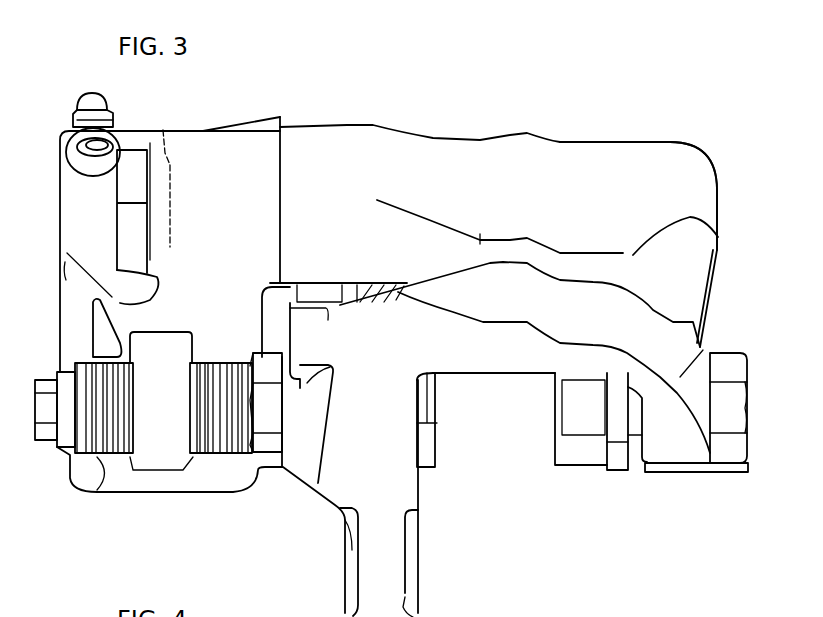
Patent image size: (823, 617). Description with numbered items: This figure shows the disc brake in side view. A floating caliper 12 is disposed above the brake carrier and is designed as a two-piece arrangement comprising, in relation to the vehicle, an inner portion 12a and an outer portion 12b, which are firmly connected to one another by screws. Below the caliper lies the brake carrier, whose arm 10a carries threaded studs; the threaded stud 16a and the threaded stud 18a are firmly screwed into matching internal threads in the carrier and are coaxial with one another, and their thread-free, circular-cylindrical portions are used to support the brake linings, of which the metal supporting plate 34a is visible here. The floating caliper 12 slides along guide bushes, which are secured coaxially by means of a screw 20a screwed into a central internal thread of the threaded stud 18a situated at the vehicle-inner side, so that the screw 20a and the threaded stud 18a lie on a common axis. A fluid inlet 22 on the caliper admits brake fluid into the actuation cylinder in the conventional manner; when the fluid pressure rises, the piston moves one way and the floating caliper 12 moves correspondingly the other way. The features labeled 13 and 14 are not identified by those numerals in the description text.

The arm of the brake carrier 10a is at (692, 443).
The floating caliper 12 is at (433, 127).
The inner portion of the floating caliper 12a is at (228, 170).
The outer portion of the floating caliper 12b is at (613, 173).
The vertical wall portion 13 is at (282, 188).
The tube 14 is at (405, 577).
The threaded stud 16a is at (577, 422).
The threaded stud 18a is at (433, 427).
The screw 20a is at (46, 445).
The fluid inlet 22 is at (72, 122).
The supporting plate 34a is at (617, 433).